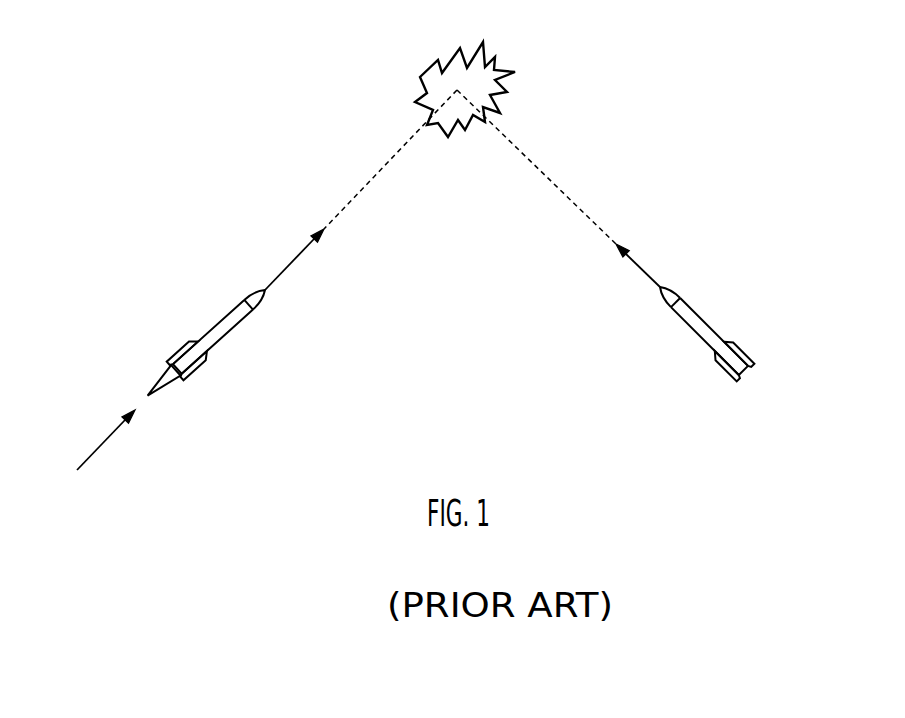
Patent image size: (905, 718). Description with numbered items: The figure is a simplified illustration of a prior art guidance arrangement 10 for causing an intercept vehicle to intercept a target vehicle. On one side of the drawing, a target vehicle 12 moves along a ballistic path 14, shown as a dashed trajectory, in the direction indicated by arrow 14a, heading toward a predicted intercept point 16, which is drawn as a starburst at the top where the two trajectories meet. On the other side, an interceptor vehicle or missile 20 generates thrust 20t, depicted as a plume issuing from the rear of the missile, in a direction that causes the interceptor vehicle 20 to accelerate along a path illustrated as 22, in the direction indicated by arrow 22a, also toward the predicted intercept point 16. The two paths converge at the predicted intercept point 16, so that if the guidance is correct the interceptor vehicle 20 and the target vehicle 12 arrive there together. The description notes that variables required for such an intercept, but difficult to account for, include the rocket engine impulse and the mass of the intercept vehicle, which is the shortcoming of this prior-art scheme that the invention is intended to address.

The prior art guidance arrangement 10 is at (467, 393).
The target vehicle 12 is at (733, 335).
The ballistic path 14 is at (568, 195).
The arrow 14a is at (640, 263).
The predicted intercept point 16 is at (505, 70).
The interceptor vehicle 20 is at (183, 345).
The thrust 20t is at (163, 380).
The path 22 is at (387, 165).
The arrow 22a is at (287, 263).